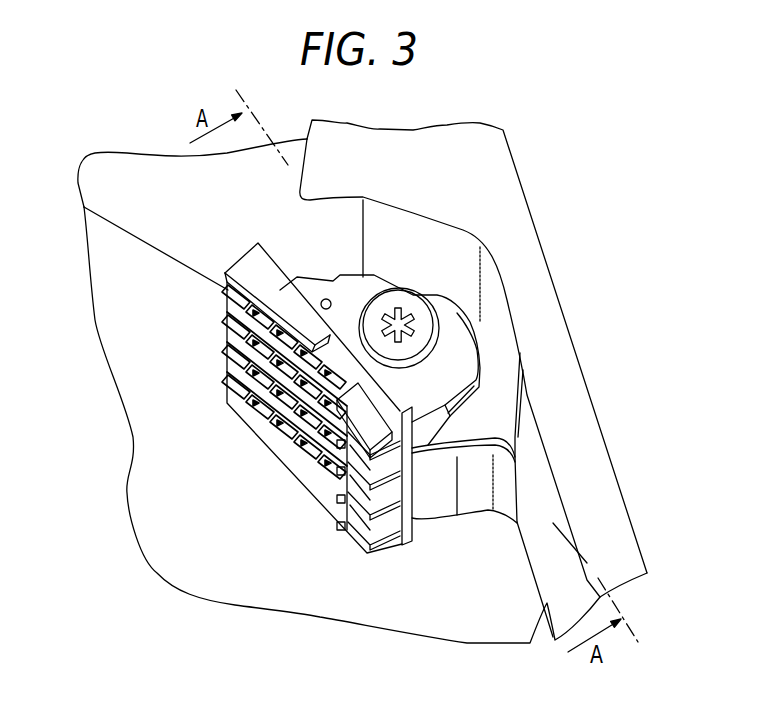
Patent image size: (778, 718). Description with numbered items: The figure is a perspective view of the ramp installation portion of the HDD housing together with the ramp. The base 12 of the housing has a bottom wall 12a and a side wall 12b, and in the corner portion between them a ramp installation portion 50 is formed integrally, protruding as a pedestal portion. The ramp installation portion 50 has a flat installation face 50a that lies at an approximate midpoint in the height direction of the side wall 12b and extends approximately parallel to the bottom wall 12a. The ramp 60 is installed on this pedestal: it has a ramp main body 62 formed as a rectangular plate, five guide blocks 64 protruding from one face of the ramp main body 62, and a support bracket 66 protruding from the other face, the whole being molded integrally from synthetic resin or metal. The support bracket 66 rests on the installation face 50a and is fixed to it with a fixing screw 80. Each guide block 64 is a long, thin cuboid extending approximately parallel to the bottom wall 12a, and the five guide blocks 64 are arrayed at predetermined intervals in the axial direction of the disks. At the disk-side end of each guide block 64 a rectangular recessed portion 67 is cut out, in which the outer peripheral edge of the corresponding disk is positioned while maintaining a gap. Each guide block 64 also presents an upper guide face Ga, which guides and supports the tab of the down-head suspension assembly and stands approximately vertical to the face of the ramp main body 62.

The base 12 is at (355, 375).
The bottom wall 12a is at (135, 511).
The side wall 12b is at (540, 298).
The ramp installation portion 50 is at (530, 504).
The installation face 50a is at (480, 414).
The ramp 60 is at (298, 398).
The ramp main body 62 is at (407, 522).
The guide blocks 64 is at (231, 362).
The support bracket 66 is at (441, 366).
The recessed portion 67 is at (227, 275).
The fixing screw 80 is at (412, 303).
The upper guide face Ga is at (293, 330).